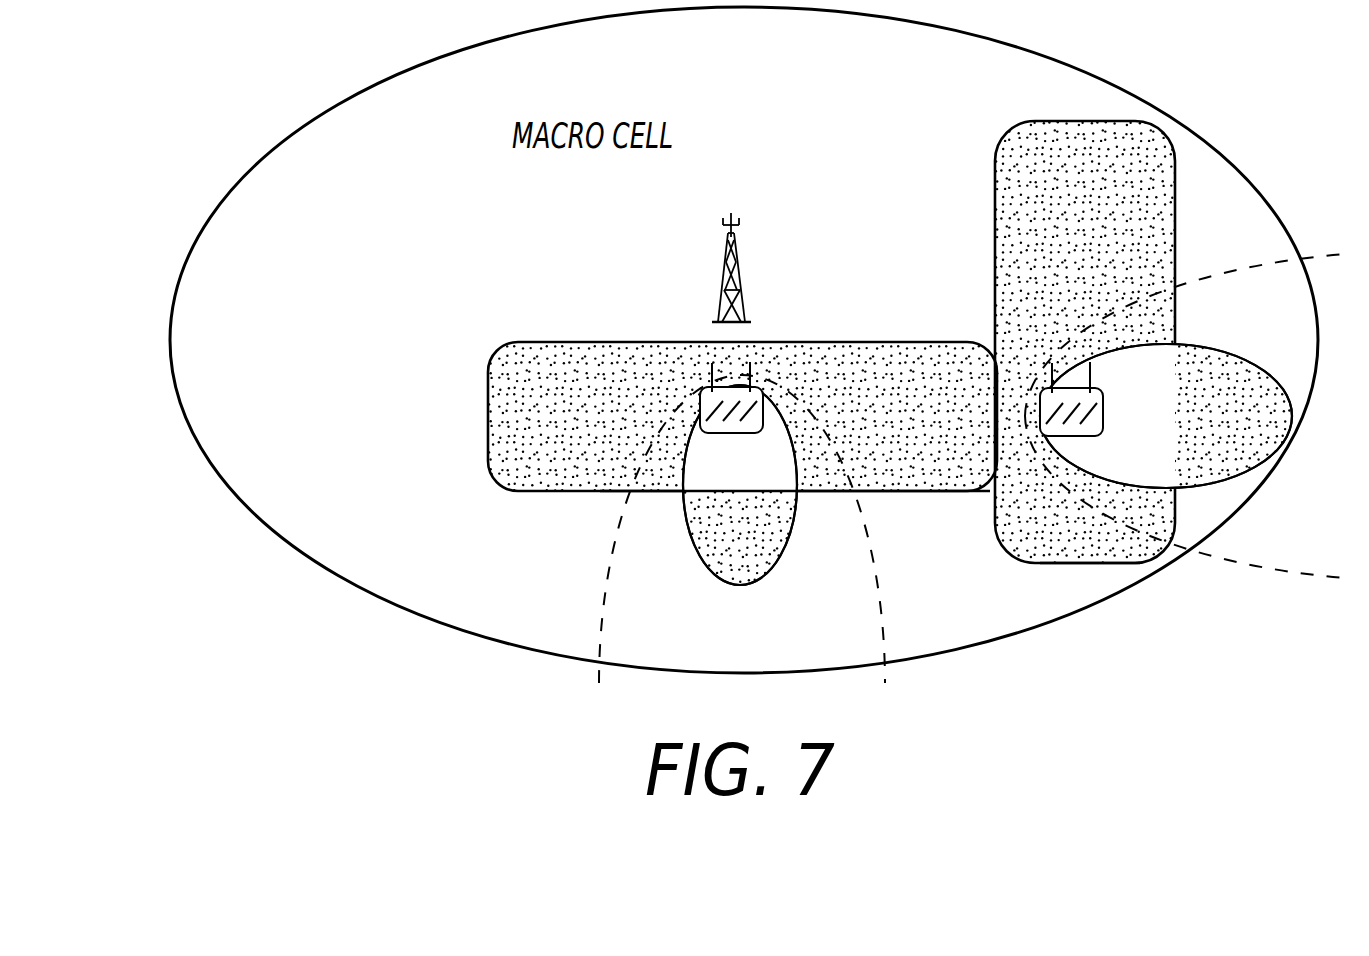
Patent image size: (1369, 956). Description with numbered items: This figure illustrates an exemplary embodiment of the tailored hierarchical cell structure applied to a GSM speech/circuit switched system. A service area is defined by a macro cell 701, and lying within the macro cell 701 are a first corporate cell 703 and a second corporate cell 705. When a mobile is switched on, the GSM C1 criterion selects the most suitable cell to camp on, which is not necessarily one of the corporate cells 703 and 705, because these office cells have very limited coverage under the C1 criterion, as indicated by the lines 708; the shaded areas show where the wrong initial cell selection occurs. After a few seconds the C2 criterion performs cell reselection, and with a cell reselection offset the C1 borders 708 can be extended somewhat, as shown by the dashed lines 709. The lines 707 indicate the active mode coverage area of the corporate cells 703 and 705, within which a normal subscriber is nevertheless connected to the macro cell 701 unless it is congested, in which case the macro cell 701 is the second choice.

The macro cell 701 is at (186, 338).
The first corporate cell 703 is at (867, 362).
The second corporate cell 705 is at (1000, 237).
The lines indicating active mode coverage area 707 is at (920, 493).
The C1 borders 708 is at (740, 586).
The dashed lines 709 is at (601, 597).